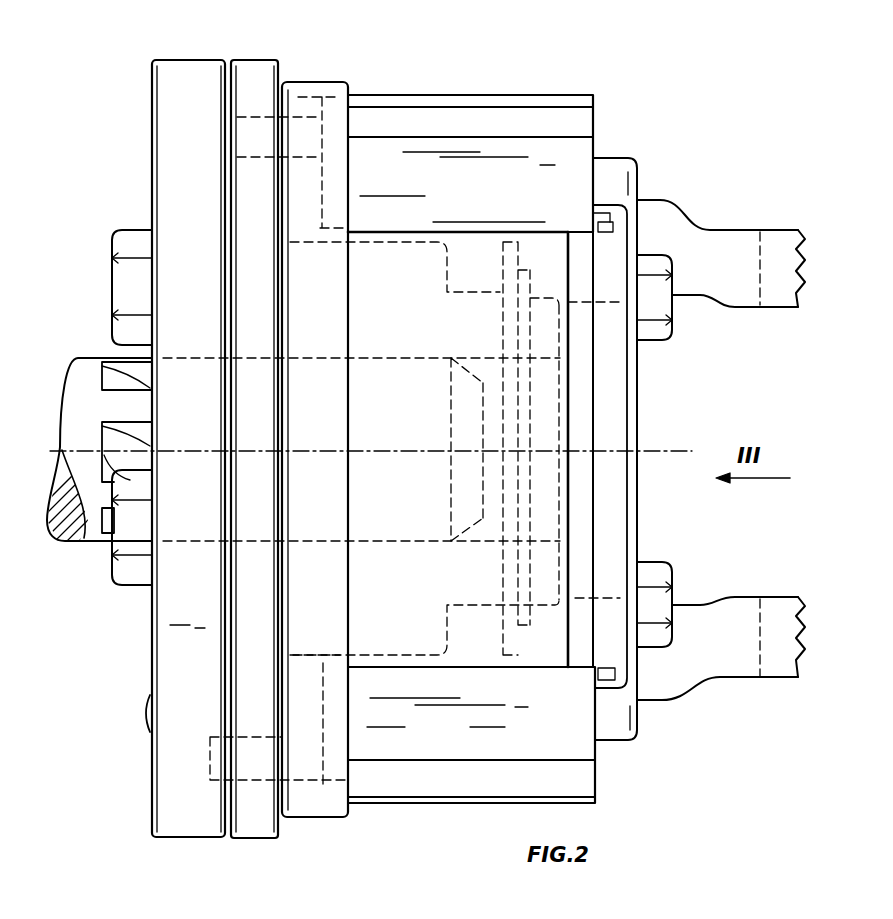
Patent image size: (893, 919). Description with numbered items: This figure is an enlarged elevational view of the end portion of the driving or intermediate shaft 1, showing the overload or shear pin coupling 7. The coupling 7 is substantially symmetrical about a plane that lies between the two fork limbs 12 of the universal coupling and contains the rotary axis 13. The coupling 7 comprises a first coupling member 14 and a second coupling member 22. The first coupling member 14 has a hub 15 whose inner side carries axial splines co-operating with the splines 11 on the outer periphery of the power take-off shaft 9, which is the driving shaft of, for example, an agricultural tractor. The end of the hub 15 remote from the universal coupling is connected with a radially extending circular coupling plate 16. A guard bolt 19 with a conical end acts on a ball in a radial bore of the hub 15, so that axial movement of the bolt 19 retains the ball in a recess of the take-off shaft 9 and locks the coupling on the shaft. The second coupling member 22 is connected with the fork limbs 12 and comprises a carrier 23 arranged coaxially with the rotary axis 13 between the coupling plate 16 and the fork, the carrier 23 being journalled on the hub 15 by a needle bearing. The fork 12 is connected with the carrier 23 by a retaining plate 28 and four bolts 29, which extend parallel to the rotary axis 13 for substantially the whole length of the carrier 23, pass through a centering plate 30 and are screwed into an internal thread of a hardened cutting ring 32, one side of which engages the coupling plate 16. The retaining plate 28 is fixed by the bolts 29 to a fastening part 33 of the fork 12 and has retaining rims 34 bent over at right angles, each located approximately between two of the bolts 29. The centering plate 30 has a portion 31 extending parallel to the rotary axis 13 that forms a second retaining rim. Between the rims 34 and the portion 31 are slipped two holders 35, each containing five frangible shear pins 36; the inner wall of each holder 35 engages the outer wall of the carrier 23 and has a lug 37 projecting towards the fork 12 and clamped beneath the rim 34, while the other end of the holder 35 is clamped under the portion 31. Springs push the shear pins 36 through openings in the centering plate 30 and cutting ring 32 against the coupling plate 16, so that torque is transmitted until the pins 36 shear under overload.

The driving or intermediate shaft 1 is at (721, 425).
The shear pin coupling 7 is at (505, 412).
The power take-off shaft 9 is at (78, 368).
The splines 11 is at (148, 446).
The fork limbs 12 is at (780, 298).
The rotary axis 13 is at (680, 450).
The first coupling member 14 is at (148, 98).
The hub 15 is at (540, 330).
The coupling plate 16 is at (168, 648).
The bolt 19 is at (132, 236).
The second coupling member 22 is at (430, 810).
The carrier 23 is at (470, 258).
The retaining plate 28 is at (632, 406).
The bolts 29 is at (666, 326).
The centering plate 30 is at (322, 80).
The portion 31 is at (352, 314).
The cutting ring 32 is at (256, 62).
The fastening part 33 is at (606, 538).
The retaining rims 34 is at (608, 178).
The holders 35 is at (568, 113).
The shear pins 36 is at (246, 140).
The lug 37 is at (612, 234).